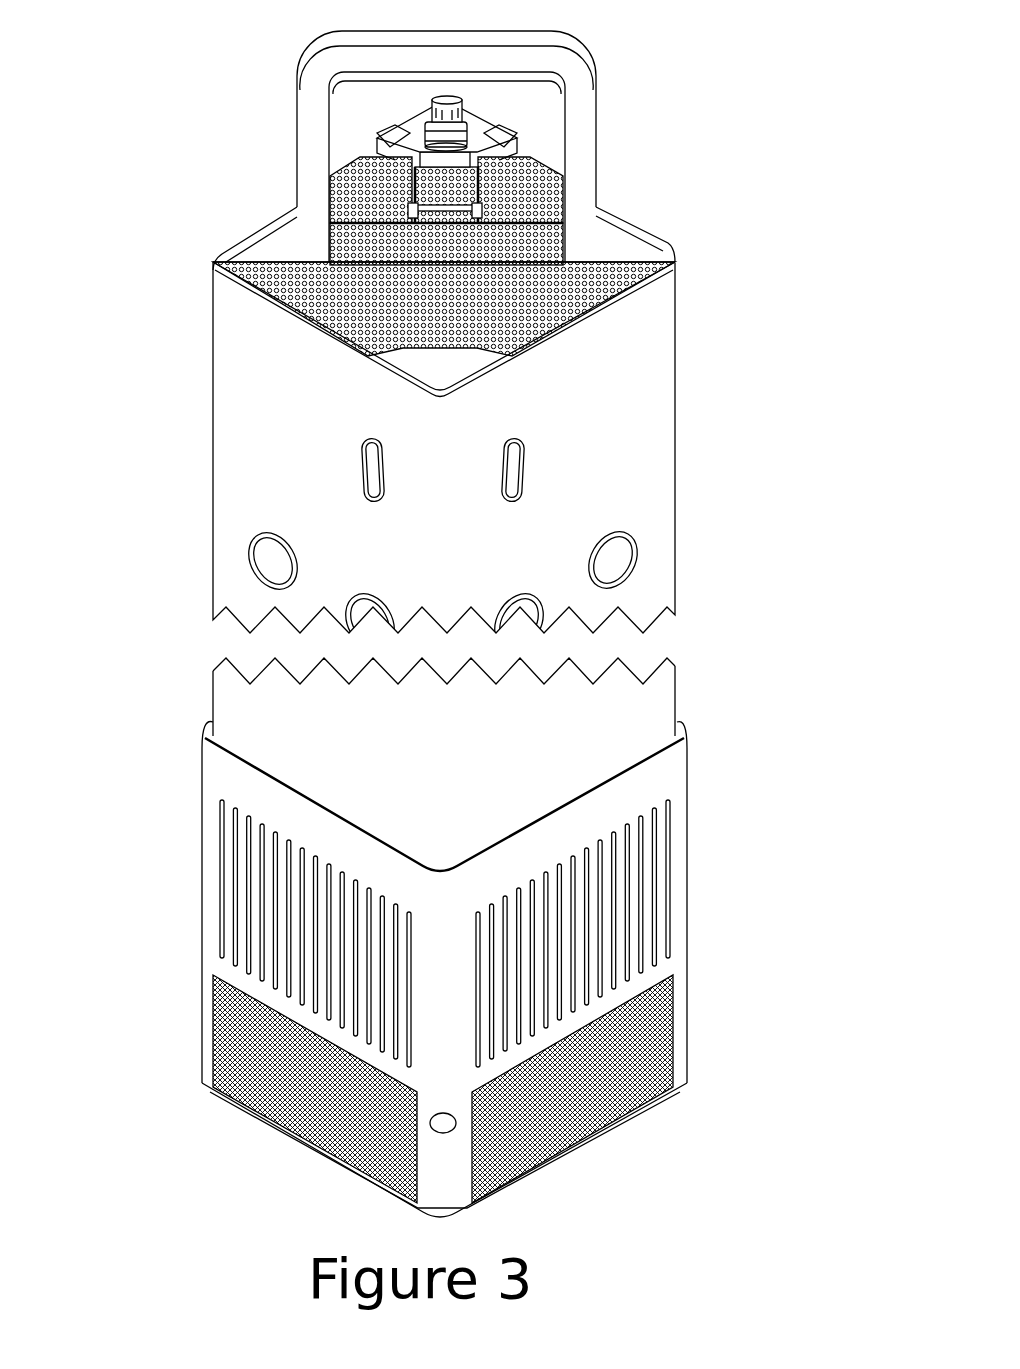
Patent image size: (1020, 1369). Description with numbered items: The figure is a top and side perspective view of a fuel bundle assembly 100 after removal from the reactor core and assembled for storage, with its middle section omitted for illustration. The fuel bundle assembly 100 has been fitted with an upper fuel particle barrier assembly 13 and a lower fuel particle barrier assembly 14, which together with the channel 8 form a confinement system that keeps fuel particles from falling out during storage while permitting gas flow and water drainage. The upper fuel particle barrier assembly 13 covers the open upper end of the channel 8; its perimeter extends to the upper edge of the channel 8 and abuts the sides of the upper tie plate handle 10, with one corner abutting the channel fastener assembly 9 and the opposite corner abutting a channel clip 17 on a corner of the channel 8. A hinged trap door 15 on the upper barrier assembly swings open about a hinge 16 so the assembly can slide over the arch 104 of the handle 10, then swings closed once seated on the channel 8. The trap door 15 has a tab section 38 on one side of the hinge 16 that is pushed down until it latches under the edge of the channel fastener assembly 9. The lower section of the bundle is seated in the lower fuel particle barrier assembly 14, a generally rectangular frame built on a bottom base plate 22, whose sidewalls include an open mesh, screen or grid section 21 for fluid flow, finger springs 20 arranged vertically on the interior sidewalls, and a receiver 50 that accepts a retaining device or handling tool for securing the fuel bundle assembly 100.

The fuel bundle assembly 100 is at (866, 378).
The arch 104 is at (452, 57).
The channel 8 is at (677, 536).
The channel fastener assembly 9 is at (415, 118).
The upper tie plate handle 10 is at (282, 237).
The upper fuel particle barrier assembly 13 is at (790, 254).
The lower fuel particle barrier assembly 14 is at (670, 966).
The hinged trap door 15 is at (560, 209).
The hinge 16 is at (449, 207).
The channel clip 17 is at (444, 367).
The finger springs 20 is at (654, 919).
The open mesh, screen or grid section 21 is at (614, 1074).
The bottom base plate 22 is at (440, 1154).
The tab section 38 is at (439, 183).
The receiver 50 is at (571, 1169).